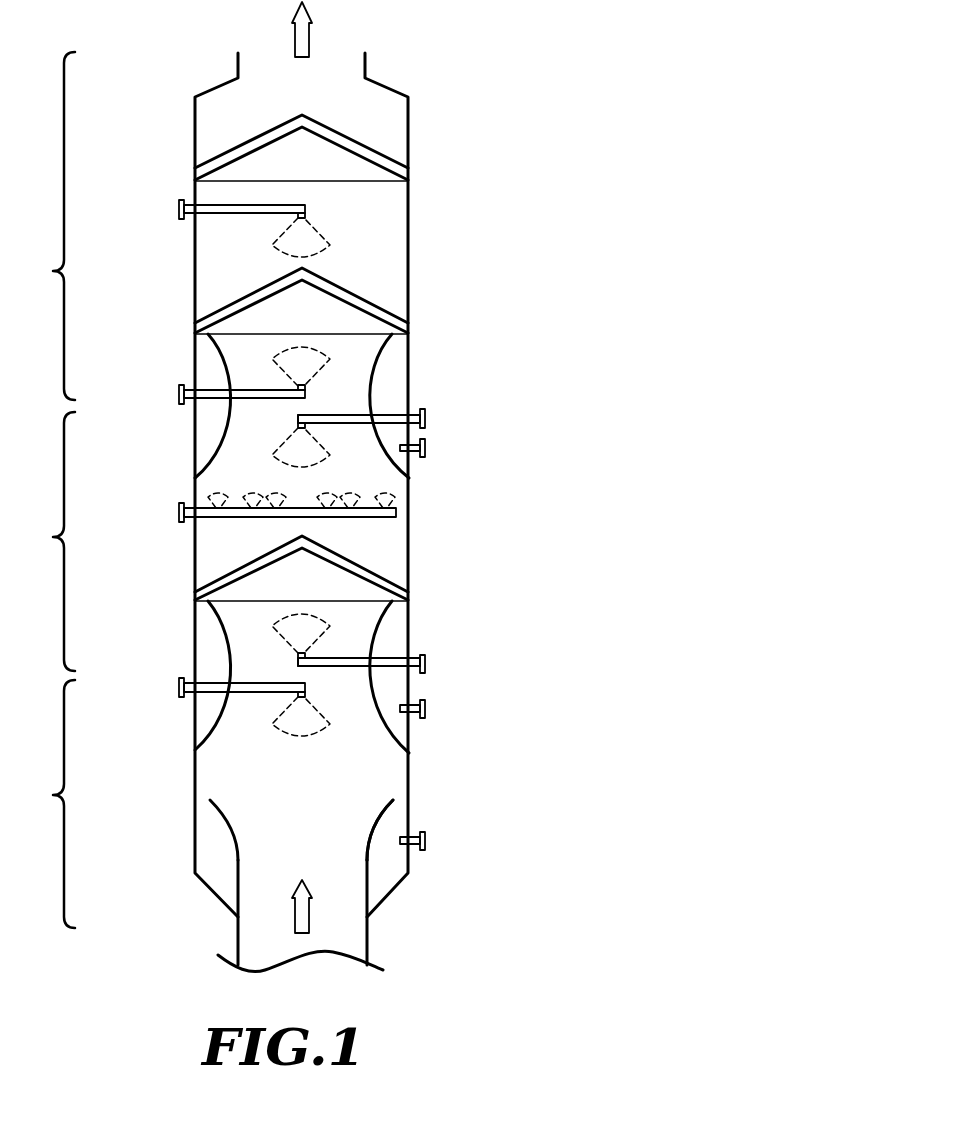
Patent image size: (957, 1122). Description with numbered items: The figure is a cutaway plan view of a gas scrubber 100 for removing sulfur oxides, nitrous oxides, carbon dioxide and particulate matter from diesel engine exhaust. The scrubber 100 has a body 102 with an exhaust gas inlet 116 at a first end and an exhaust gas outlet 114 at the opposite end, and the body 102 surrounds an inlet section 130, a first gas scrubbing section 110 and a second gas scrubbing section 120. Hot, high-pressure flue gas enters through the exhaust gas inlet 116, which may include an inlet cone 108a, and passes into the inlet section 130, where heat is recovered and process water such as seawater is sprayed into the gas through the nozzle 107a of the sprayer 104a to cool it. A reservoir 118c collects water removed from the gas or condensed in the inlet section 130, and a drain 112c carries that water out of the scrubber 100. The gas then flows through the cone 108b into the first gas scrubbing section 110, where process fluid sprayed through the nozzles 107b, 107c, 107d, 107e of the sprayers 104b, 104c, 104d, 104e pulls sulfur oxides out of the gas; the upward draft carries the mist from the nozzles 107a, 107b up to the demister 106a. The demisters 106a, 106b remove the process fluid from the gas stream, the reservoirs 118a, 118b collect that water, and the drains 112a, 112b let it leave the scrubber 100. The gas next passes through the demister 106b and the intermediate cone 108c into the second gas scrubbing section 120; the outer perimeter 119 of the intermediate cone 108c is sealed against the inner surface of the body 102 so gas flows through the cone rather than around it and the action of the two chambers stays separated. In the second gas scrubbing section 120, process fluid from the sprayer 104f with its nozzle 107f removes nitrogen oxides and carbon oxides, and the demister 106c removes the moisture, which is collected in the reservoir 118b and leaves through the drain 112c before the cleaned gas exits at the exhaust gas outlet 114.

The gas scrubber 100 is at (552, 97).
The body 102 is at (409, 198).
The sprayer 104a is at (271, 701).
The sprayer 104b is at (340, 645).
The sprayer 104c is at (252, 522).
The sprayer 104d is at (353, 455).
The sprayer 104e is at (271, 382).
The sprayer 104f is at (271, 225).
The demister 106a is at (372, 578).
The demister 106b is at (370, 310).
The demister 106c is at (370, 157).
The nozzle 107a is at (310, 693).
The nozzle 107b is at (303, 658).
The nozzle 107c is at (253, 507).
The nozzle 107d is at (297, 427).
The nozzle 107e is at (310, 385).
The nozzle 107f is at (308, 217).
The inlet cone 108a is at (368, 875).
The cone 108b is at (384, 616).
The intermediate cone 108c is at (384, 356).
The first gas scrubbing section 110 is at (37, 541).
The drain 112a is at (424, 709).
The drain 112b is at (425, 448).
The drain 112c is at (425, 840).
The exhaust gas outlet 114 is at (342, 72).
The exhaust gas inlet 116 is at (338, 903).
The reservoir 118a is at (393, 682).
The reservoir 118b is at (387, 432).
The reservoir 118c is at (383, 860).
The outer perimeter 119 is at (409, 481).
The second gas scrubbing section 120 is at (37, 226).
The inlet section 130 is at (37, 804).